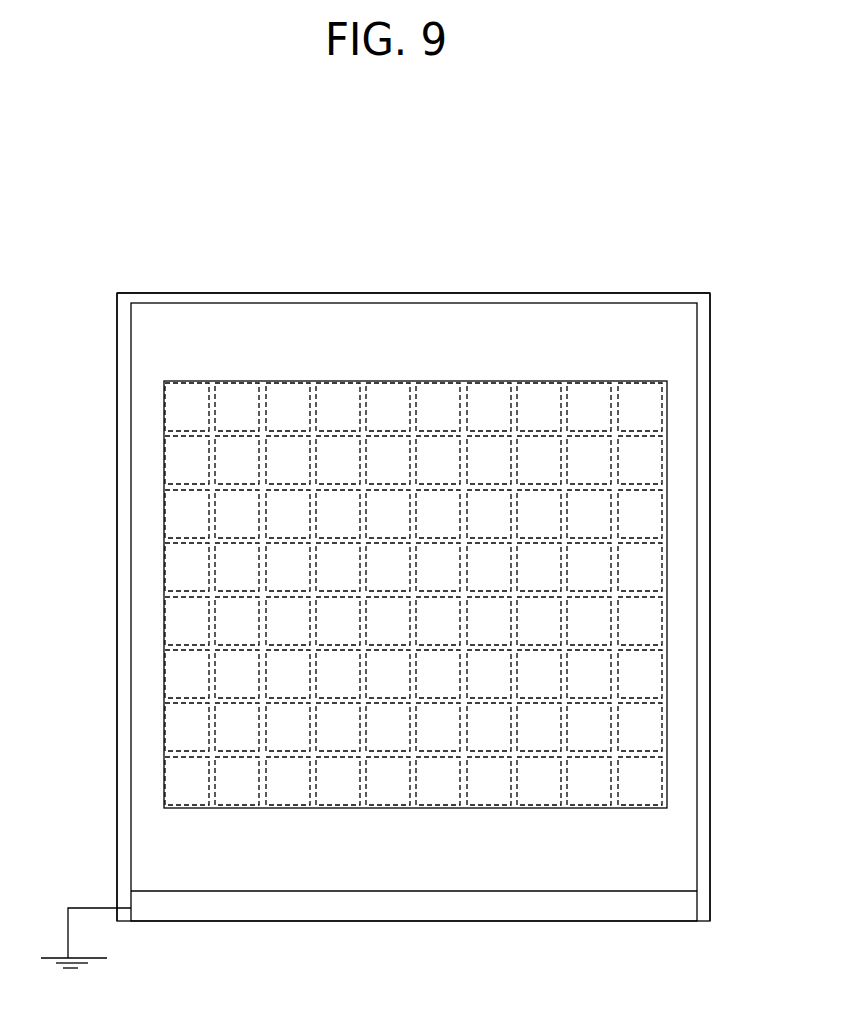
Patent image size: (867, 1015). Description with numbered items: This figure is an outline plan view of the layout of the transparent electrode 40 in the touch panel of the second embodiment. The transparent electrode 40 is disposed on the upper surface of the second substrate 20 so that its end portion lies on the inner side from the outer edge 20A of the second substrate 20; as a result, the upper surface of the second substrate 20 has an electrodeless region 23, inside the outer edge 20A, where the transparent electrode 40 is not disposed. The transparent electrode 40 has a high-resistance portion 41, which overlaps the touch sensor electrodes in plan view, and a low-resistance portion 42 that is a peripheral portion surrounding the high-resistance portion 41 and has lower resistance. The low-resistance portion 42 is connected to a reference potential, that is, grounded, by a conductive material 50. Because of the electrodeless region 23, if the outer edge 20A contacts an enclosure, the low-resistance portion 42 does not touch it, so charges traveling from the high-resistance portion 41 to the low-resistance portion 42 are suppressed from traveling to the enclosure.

The second substrate 20 is at (525, 296).
The outer edge 20A is at (630, 296).
The electrodeless region 23 is at (588, 298).
The transparent electrode 40 is at (680, 300).
The high-resistance portion 41 is at (363, 382).
The low-resistance portion 42 is at (433, 350).
The conductive material 50 is at (688, 909).